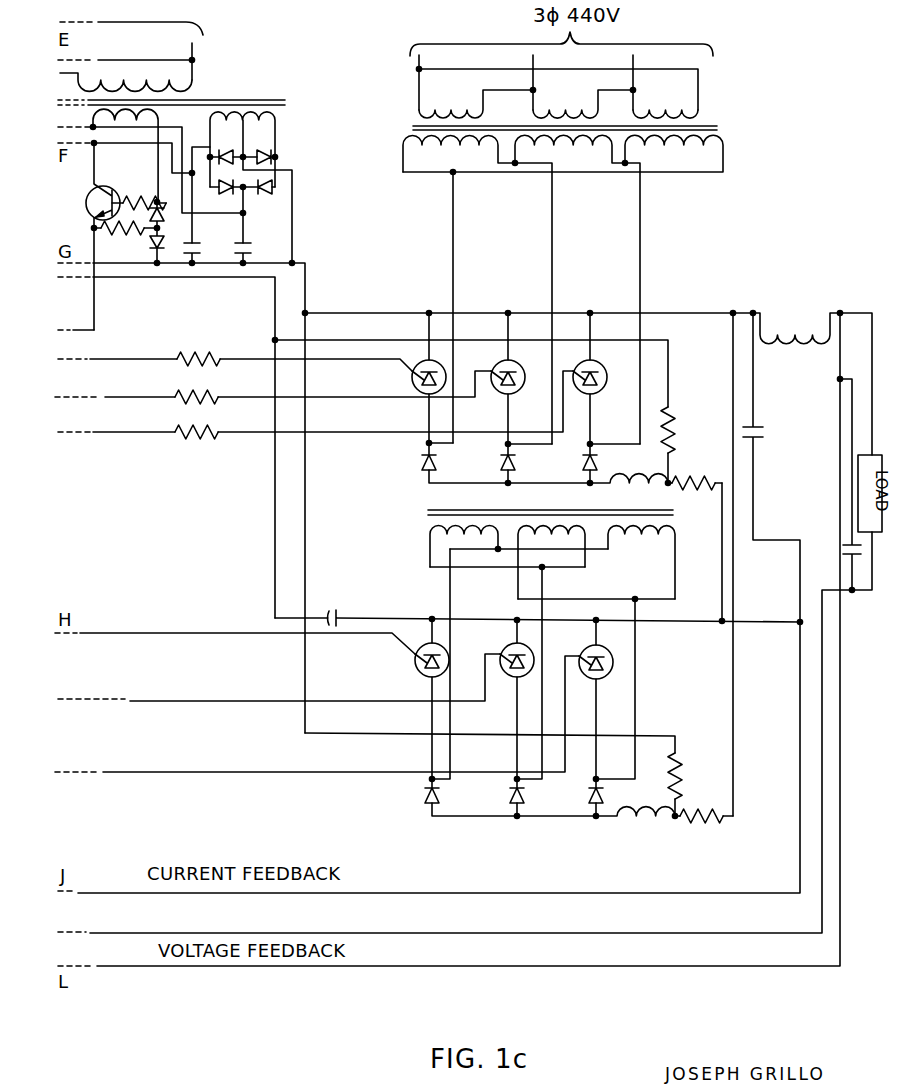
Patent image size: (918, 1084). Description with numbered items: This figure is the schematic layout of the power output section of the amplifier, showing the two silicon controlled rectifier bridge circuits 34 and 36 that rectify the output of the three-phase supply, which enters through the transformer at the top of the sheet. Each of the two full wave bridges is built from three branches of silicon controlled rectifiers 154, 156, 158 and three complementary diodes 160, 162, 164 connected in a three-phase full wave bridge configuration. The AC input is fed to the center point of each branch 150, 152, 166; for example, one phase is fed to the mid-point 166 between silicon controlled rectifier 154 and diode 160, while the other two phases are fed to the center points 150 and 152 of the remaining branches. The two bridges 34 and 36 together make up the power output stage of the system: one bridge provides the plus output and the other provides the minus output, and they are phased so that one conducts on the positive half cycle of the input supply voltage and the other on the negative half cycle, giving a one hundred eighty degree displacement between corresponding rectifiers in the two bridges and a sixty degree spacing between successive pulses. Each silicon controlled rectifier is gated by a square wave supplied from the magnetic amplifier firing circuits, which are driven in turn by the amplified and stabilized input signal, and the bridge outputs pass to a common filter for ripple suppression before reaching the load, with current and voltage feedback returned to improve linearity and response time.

The silicon controlled rectifier bridge circuit 34 is at (390, 694).
The silicon controlled rectifier bridge circuit 36 is at (371, 392).
The center point of branch 150 is at (434, 441).
The center point of branch 152 is at (510, 442).
The silicon controlled rectifier 154 is at (418, 364).
The silicon controlled rectifier 156 is at (497, 364).
The silicon controlled rectifier 158 is at (597, 366).
The diode 160 is at (421, 462).
The diode 162 is at (501, 462).
The diode 164 is at (582, 462).
The mid-point 166 is at (592, 442).